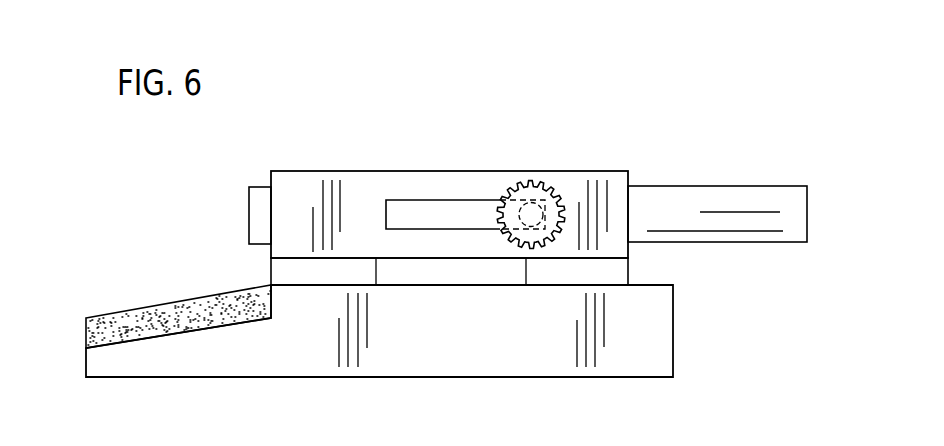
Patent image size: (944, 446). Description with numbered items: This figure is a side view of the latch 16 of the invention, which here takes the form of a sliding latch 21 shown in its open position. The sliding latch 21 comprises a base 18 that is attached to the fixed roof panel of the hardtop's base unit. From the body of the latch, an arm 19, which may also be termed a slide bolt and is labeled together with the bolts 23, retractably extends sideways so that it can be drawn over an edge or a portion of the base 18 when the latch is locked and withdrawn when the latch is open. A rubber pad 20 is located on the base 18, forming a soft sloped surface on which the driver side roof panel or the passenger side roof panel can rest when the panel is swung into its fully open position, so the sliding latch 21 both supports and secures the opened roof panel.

The latch 16 is at (481, 181).
The sliding latch 21 is at (481, 181).
The base 18 is at (648, 330).
The arm 19 is at (481, 192).
The bolts 23 is at (249, 212).
The rubber pad 20 is at (168, 322).